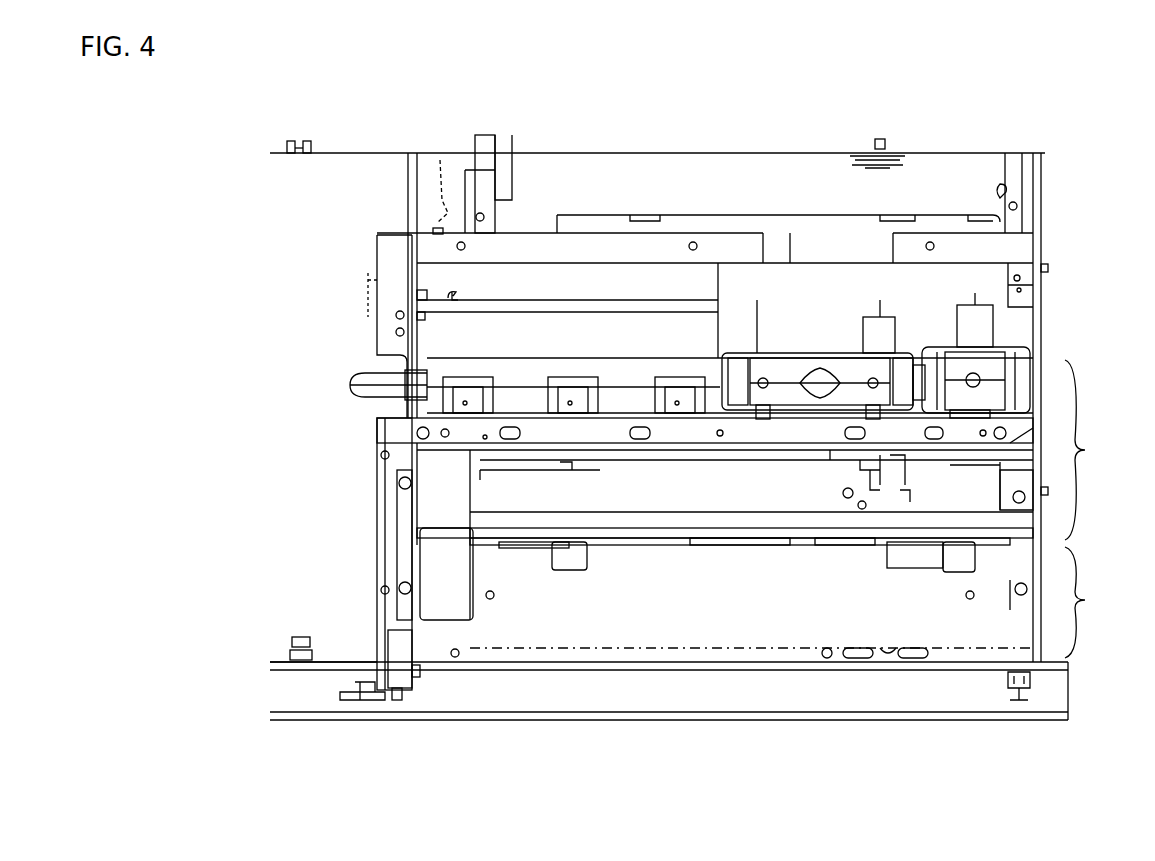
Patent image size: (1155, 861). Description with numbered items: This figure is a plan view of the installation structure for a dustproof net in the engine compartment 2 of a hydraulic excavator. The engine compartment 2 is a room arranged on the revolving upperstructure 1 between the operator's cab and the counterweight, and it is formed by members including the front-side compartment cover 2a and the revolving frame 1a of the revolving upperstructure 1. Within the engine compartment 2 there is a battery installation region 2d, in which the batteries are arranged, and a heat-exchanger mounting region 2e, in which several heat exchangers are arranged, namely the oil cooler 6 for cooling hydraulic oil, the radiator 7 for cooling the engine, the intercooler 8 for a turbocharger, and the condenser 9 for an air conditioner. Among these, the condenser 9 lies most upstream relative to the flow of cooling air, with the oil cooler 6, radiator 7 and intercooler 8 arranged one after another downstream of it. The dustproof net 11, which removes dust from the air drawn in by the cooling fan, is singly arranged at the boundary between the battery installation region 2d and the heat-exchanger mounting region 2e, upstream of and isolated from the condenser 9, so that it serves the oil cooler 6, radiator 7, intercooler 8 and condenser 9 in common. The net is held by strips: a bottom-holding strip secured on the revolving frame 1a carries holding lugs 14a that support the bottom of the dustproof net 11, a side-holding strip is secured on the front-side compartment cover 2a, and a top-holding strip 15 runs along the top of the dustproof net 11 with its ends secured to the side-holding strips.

The revolving upperstructure 1 is at (676, 721).
The revolving frame 1a is at (300, 548).
The engine compartment 2 is at (762, 158).
The front-side compartment cover 2a is at (386, 558).
The battery installation region 2d is at (789, 602).
The heat-exchanger mounting region 2e is at (752, 490).
The oil cooler 6 is at (522, 395).
The radiator 7 is at (787, 370).
The intercooler 8 is at (940, 367).
The condenser 9 is at (593, 468).
The dustproof net 11 is at (728, 542).
The holding lugs 14a is at (567, 575).
The top-holding strip 15 is at (845, 542).